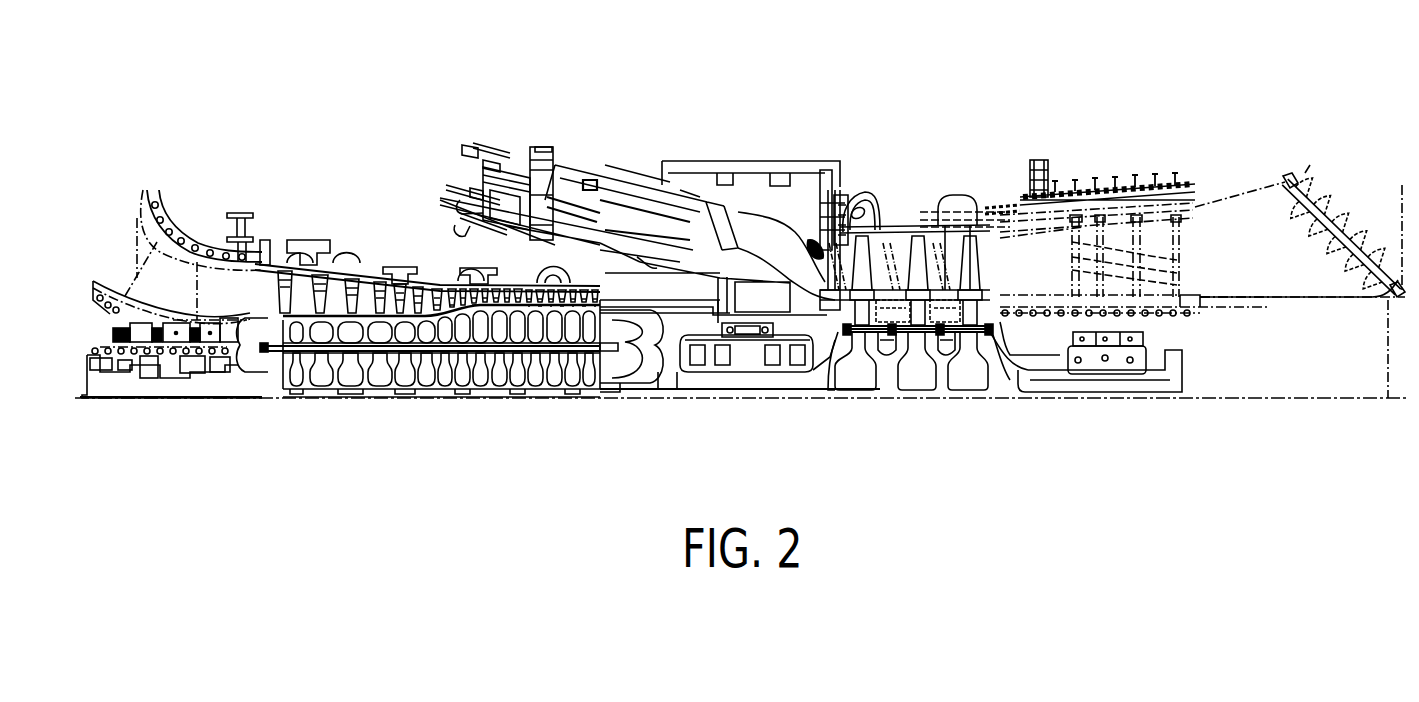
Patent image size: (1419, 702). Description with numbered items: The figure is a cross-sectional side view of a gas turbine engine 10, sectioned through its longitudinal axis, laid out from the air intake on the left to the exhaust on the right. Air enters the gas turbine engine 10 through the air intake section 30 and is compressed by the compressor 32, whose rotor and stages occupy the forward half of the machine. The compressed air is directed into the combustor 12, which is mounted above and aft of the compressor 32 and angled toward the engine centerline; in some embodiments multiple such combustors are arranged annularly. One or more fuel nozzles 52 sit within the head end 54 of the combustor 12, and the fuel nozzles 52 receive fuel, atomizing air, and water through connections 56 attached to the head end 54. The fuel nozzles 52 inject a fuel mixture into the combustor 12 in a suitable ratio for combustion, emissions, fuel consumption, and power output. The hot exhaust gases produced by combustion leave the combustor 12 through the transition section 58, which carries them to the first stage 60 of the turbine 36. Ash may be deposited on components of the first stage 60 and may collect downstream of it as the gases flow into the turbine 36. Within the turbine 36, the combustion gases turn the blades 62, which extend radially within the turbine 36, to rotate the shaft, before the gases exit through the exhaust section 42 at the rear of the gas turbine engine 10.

The gas turbine engine 10 is at (653, 426).
The combustor 12 is at (797, 173).
The air intake section 30 is at (152, 292).
The compressor 32 is at (455, 236).
The turbine 36 is at (950, 148).
The exhaust section 42 is at (1402, 147).
The fuel nozzles 52 is at (540, 202).
The head end 54 is at (557, 130).
The connections 56 is at (463, 165).
The transition section 58 is at (800, 272).
The first stage 60 is at (895, 405).
The blades 62 is at (935, 283).